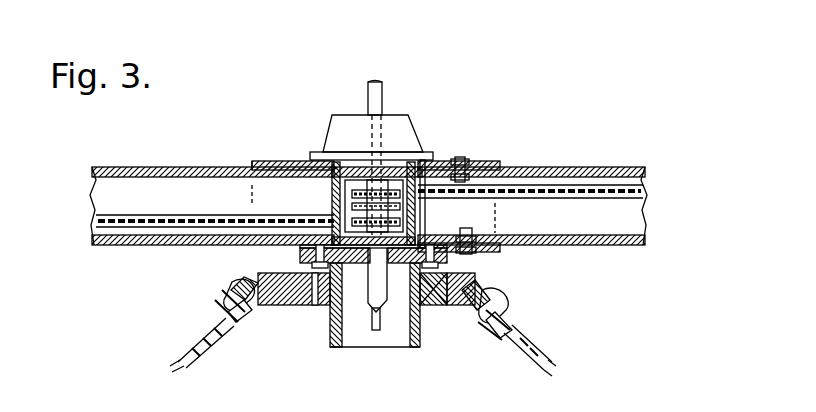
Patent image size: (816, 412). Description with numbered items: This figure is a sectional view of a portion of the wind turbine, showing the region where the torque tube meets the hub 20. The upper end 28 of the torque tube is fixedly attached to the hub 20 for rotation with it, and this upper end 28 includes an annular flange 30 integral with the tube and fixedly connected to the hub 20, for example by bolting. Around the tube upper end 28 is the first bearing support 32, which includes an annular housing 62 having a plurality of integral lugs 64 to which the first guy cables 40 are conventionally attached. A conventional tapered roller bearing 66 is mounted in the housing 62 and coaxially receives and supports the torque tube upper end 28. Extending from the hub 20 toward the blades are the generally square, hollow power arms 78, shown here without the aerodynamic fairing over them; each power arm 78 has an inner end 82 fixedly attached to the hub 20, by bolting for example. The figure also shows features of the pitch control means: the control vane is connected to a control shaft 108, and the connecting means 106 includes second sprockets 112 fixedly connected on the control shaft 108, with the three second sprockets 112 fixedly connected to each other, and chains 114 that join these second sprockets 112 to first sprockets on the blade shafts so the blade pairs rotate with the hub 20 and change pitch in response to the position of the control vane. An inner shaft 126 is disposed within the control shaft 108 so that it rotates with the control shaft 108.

The hub 20 is at (466, 160).
The upper end 28 is at (330, 322).
The annular flange 30 is at (460, 257).
The first bearing support 32 is at (490, 272).
The first guy cables 40 is at (530, 333).
The annular housing 62 is at (462, 307).
The lugs 64 is at (470, 290).
The tapered roller bearing 66 is at (434, 320).
The power arms 78 is at (318, 183).
The inner end 82 is at (498, 168).
The connecting means 106 is at (155, 205).
The control shaft 108 is at (384, 90).
The second sprockets 112 is at (345, 206).
The chains 114 is at (537, 201).
The inner shaft 126 is at (352, 347).